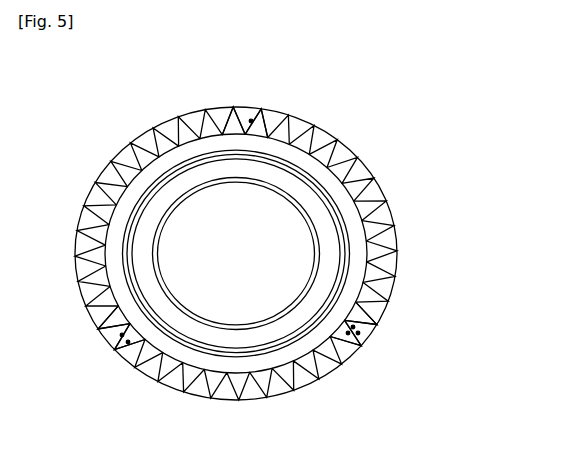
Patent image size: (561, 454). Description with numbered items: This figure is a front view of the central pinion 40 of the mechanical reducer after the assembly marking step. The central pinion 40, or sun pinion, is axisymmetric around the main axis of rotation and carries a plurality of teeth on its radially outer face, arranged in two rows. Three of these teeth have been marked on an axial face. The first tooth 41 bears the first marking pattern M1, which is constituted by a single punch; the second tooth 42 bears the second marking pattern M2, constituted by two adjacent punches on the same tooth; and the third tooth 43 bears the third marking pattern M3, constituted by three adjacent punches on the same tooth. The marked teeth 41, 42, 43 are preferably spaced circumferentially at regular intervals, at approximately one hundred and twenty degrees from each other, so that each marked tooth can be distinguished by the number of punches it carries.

The central pinion 40 is at (425, 132).
The first tooth 41 is at (255, 111).
The second tooth 42 is at (116, 343).
The third tooth 43 is at (363, 343).
The first marking pattern M1 is at (250, 121).
The second marking pattern M2 is at (116, 334).
The third marking pattern M3 is at (366, 333).